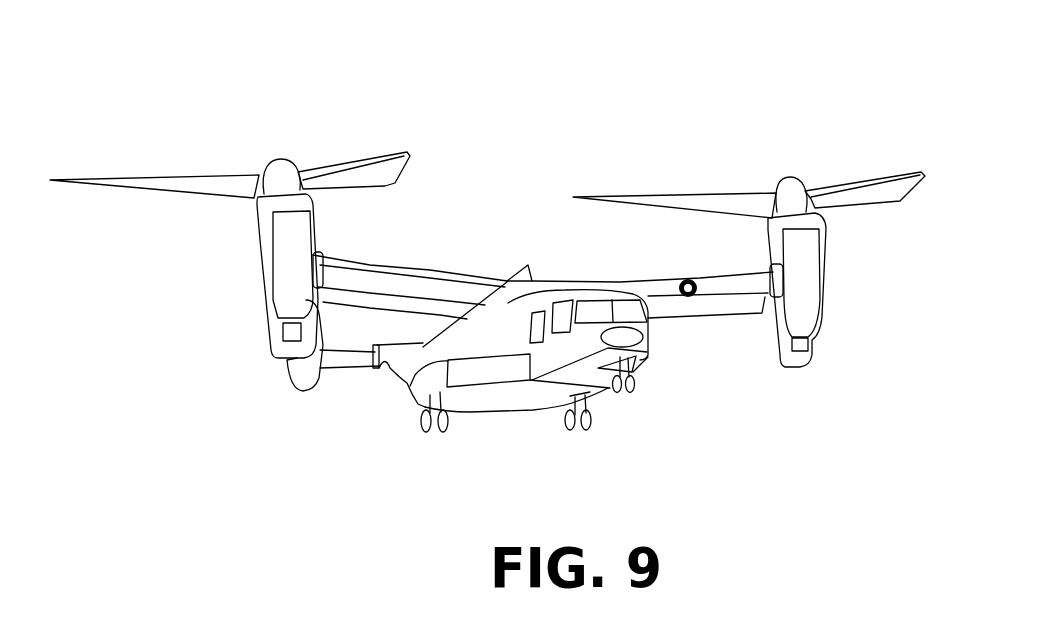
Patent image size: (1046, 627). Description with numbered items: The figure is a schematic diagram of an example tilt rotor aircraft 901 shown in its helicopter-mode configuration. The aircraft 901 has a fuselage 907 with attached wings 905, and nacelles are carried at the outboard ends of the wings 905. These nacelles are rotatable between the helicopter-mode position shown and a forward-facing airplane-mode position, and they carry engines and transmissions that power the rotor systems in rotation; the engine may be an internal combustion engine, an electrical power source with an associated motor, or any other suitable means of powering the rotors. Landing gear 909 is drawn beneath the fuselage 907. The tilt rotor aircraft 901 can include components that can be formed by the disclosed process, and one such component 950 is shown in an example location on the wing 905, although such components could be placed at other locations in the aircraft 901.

The tilt rotor aircraft 901 is at (502, 272).
The wings 905 is at (403, 267).
The fuselage 907 is at (648, 352).
The landing gear 909 is at (420, 425).
The component 950 is at (683, 279).